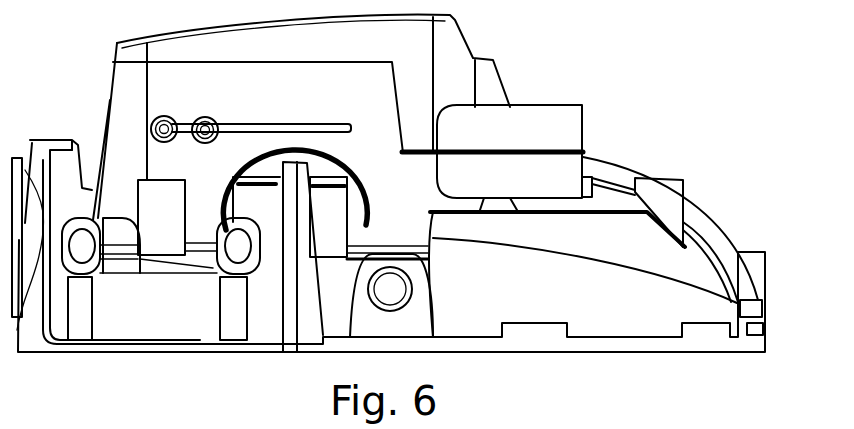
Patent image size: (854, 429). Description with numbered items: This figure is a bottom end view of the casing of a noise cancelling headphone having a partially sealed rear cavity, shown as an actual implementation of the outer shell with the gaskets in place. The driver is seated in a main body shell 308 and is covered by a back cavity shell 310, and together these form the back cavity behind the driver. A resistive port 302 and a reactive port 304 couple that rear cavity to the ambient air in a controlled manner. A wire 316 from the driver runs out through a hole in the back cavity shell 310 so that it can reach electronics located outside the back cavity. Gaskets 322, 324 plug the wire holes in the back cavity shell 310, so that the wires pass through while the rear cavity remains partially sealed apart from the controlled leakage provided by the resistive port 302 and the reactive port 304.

The resistive port 302 is at (368, 190).
The reactive port 304 is at (593, 130).
The main body shell 308 is at (723, 232).
The back cavity shell 310 is at (460, 47).
The wire 316 is at (292, 123).
The gasket 322 is at (202, 116).
The gasket 324 is at (155, 116).